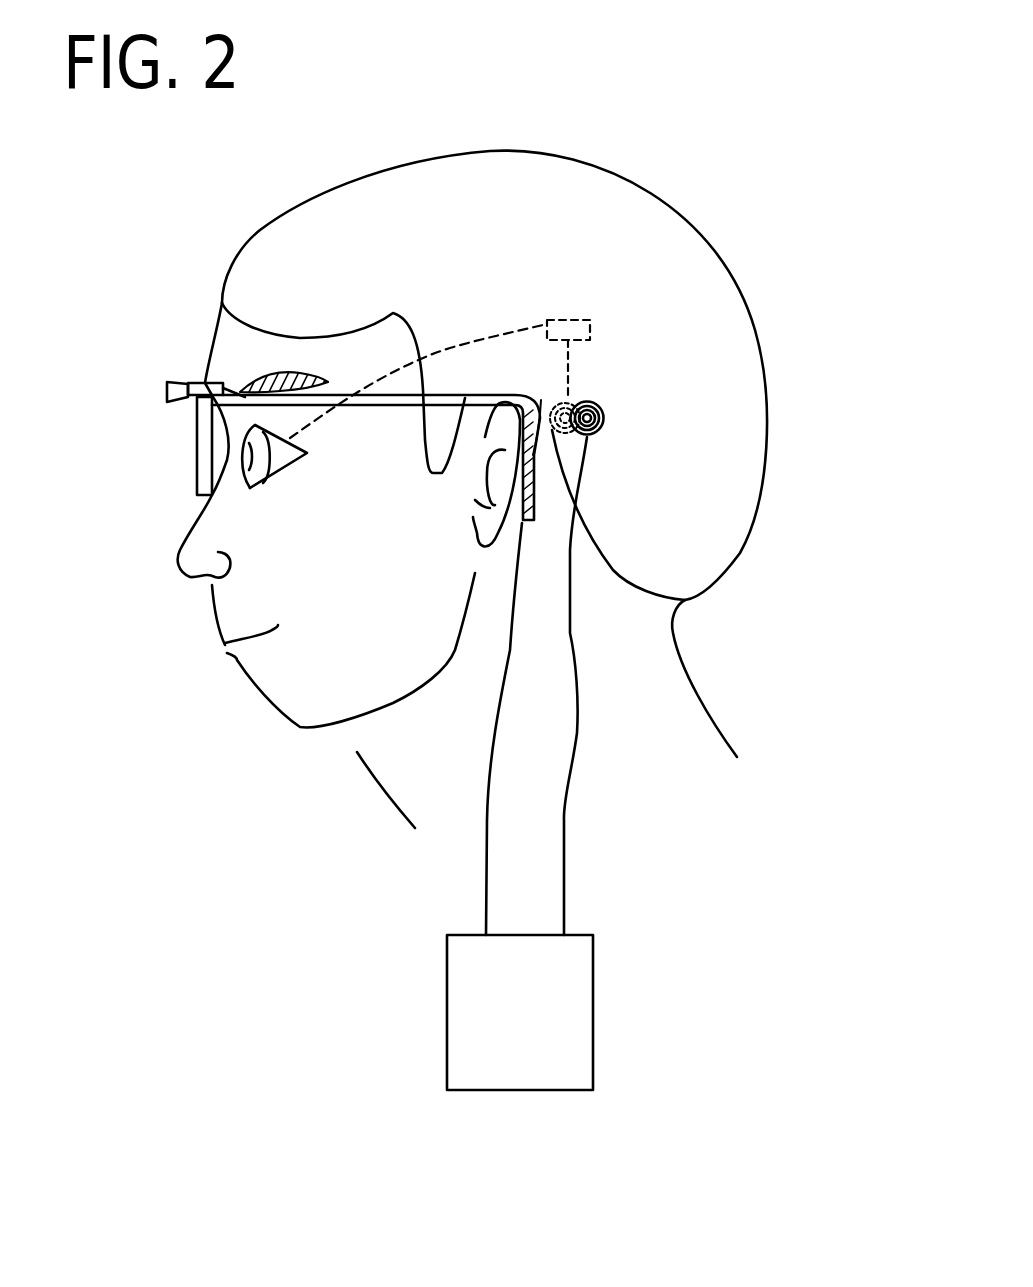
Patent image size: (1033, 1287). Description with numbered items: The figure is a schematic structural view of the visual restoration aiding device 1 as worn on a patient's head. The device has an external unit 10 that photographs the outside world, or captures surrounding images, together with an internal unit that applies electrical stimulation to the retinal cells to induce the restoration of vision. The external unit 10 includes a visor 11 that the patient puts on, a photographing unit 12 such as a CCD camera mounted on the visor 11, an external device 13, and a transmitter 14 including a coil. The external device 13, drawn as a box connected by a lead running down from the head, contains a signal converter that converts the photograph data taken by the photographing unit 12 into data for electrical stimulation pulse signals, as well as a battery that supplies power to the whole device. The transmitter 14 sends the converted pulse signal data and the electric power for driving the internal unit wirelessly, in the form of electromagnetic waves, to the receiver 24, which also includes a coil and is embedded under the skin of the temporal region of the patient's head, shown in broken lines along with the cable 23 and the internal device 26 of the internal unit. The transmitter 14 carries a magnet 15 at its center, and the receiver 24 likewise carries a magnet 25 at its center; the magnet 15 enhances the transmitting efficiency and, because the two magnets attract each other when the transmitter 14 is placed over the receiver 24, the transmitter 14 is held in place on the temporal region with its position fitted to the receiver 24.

The visual restoration aiding device 1 is at (391, 621).
The external unit 10 is at (277, 363).
The visor 11 is at (193, 473).
The photographing unit 12 is at (212, 383).
The external device 13 is at (593, 995).
The transmitter 14 is at (607, 423).
The magnet 15 is at (605, 418).
The cable 23 is at (368, 377).
The receiver 24 is at (573, 400).
The magnet 25 is at (558, 400).
The internal device 26 is at (590, 330).